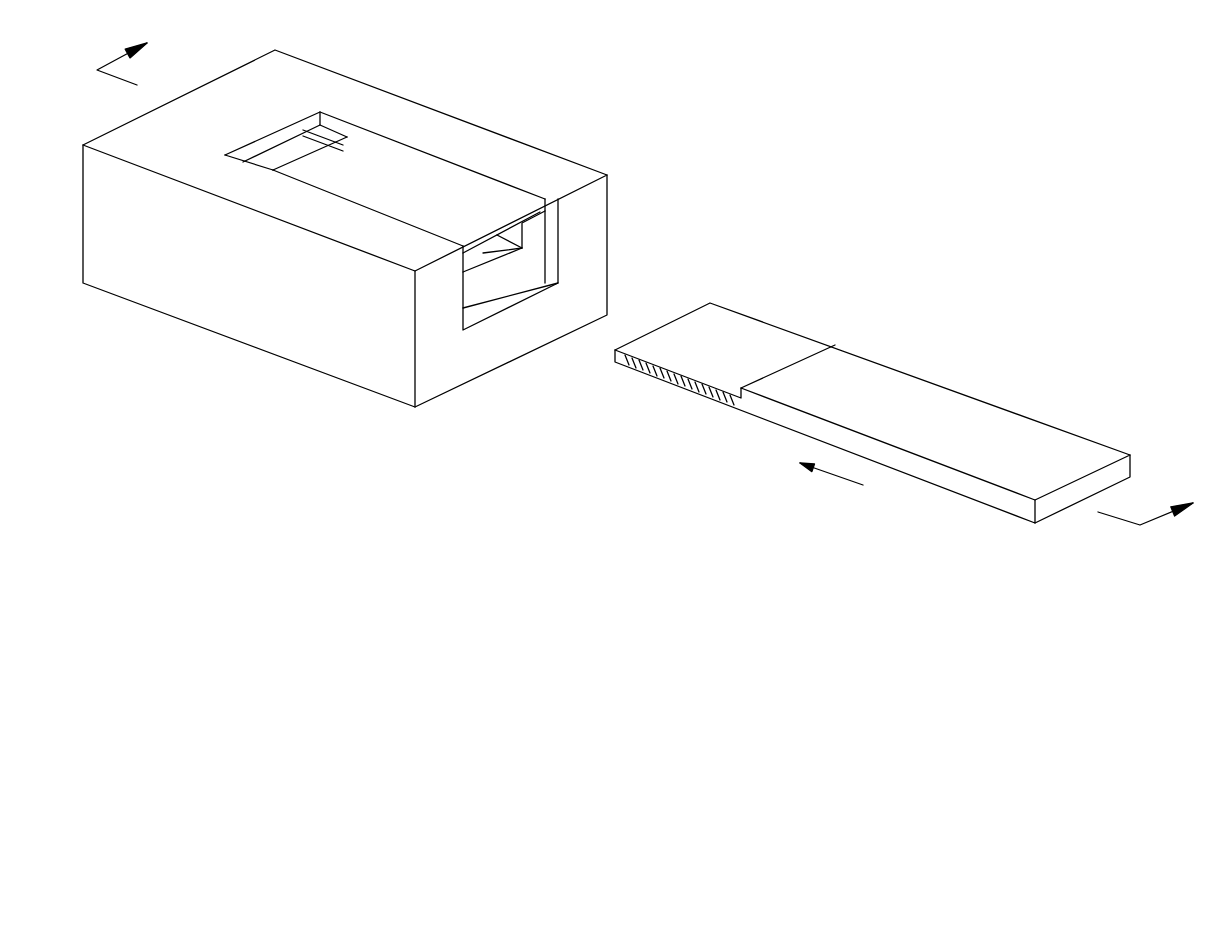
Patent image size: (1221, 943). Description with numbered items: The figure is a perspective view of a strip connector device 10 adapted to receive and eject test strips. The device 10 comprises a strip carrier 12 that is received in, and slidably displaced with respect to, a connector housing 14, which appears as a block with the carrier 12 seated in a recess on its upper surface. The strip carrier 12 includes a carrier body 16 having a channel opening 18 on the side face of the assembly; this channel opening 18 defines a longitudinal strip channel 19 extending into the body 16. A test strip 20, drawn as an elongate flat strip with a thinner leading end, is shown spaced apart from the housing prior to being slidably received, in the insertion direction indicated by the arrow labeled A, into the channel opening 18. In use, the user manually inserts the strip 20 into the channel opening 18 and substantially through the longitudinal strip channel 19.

The strip connector device 10 is at (670, 98).
The strip carrier 12 is at (395, 150).
The connector housing 14 is at (262, 325).
The carrier body 16 is at (545, 222).
The channel opening 18 is at (505, 239).
The longitudinal strip channel 19 is at (483, 253).
The test strip 20 is at (952, 408).